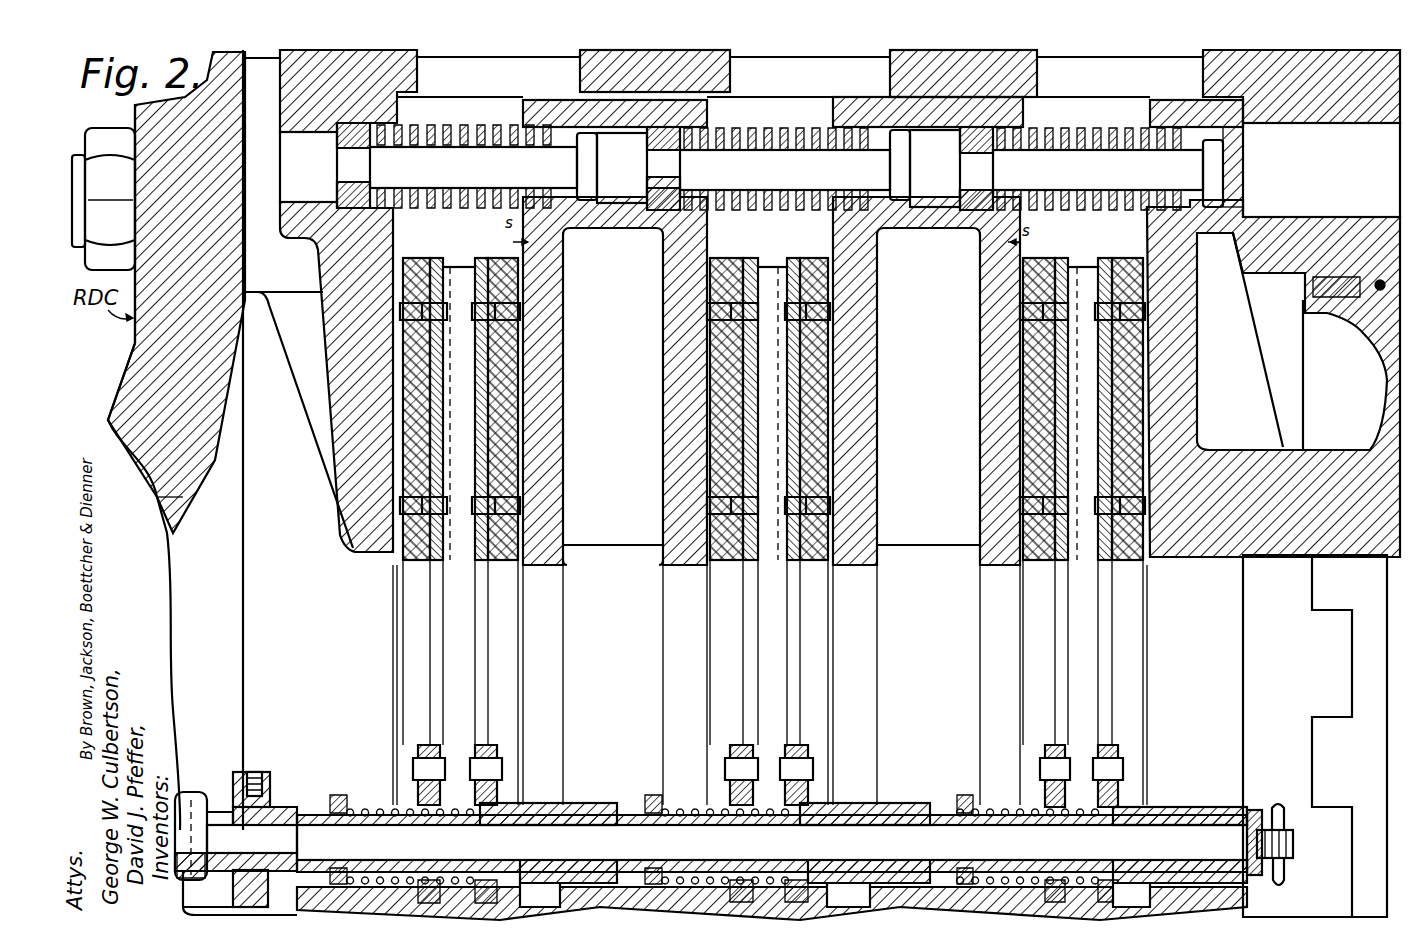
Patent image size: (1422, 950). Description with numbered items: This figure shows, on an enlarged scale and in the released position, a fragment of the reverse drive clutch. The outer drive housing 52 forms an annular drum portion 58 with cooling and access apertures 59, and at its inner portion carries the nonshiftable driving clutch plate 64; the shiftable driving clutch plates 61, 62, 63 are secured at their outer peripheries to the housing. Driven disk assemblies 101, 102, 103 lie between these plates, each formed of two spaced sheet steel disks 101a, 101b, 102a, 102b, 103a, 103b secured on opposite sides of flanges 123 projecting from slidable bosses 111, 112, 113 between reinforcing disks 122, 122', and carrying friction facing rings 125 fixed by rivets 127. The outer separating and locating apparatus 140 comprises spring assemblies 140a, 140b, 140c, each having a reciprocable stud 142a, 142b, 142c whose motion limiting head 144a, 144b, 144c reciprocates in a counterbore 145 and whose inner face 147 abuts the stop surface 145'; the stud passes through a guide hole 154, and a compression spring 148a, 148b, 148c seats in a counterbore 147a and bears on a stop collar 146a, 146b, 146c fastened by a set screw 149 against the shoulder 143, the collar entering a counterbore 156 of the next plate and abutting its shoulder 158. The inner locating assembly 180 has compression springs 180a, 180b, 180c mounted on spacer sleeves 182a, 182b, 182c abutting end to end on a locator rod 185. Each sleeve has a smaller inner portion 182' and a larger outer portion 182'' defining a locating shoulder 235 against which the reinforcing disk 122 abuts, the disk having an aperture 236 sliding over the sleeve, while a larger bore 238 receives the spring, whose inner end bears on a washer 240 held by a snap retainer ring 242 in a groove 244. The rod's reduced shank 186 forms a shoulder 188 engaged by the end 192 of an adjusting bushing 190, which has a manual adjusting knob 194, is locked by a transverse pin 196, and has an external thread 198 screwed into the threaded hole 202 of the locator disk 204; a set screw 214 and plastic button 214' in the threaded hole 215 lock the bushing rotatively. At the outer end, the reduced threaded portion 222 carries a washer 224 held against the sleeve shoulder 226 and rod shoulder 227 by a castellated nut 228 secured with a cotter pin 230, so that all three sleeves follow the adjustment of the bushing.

The outer drive housing 52 is at (350, 63).
The annular drum portion 58 is at (582, 70).
The apertures 59 is at (418, 72).
The driving clutch plate 61 is at (1195, 545).
The driving clutch plate 62 is at (921, 553).
The driving clutch plate 63 is at (608, 553).
The driving clutch plate 64 is at (362, 505).
The driven disk assembly 101 is at (1085, 275).
The sheet steel disk 101a is at (1110, 565).
The sheet steel disk 101b is at (1052, 565).
The driven disk assembly 102 is at (772, 272).
The sheet steel disk 102a is at (800, 565).
The sheet steel disk 102b is at (740, 565).
The driven disk assembly 103 is at (468, 275).
The sheet steel disk 103a is at (490, 565).
The sheet steel disk 103b is at (430, 565).
The slidable boss 111 is at (1142, 910).
The slidable boss 112 is at (852, 895).
The slidable boss 113 is at (542, 895).
The reinforcing disk 122 is at (808, 760).
The reinforcing disk 122' is at (676, 712).
The flange 123 is at (450, 748).
The friction facing rings 125 is at (720, 370).
The rivets 127 is at (718, 312).
The separating and locating apparatus 140 is at (320, 170).
The spring assembly 140a is at (1112, 127).
The spring assembly 140b is at (772, 127).
The spring assembly 140c is at (466, 125).
The reciprocable stud 142a is at (1110, 176).
The reciprocable stud 142b is at (808, 176).
The reciprocable stud 142c is at (490, 176).
The shoulder 143 is at (368, 171).
The motion limiting head 144a is at (1223, 172).
The motion limiting head 144b is at (890, 175).
The motion limiting head 144c is at (577, 165).
The counterbore 145 is at (949, 133).
The stop surface 145' is at (1275, 207).
The stop collar 146a is at (940, 232).
The stop collar 146b is at (630, 232).
The stop collar 146c is at (323, 260).
The inner face 147 is at (1200, 163).
The counterbore 147a is at (1128, 130).
The compression spring 148a is at (1080, 232).
The compression spring 148b is at (748, 244).
The compression spring 148c is at (440, 240).
The set screw 149 is at (337, 147).
The guide hole 154 is at (1240, 140).
The counterbore 156 is at (393, 130).
The shoulder 158 is at (606, 220).
The locating assembly 180 is at (325, 735).
The compression spring 180a is at (1010, 800).
The compression spring 180b is at (690, 800).
The compression spring 180c is at (380, 800).
The inner portion 182' is at (650, 872).
The outer portion 182'' is at (883, 888).
The spacer sleeve 182a is at (1195, 785).
The spacer sleeve 182b is at (880, 805).
The spacer sleeve 182c is at (580, 803).
The locator rod 185 is at (634, 851).
The reduced shank portion 186 is at (268, 880).
The shoulder 188 is at (297, 850).
The adjusting bushing 190 is at (247, 790).
The outer end 192 is at (290, 808).
The manual adjusting knob 194 is at (198, 792).
The transverse pin 196 is at (223, 841).
The external thread 198 is at (240, 892).
The threaded hole 202 is at (236, 839).
The locator disk 204 is at (270, 778).
The set screw 214 is at (259, 765).
The plastic button 214' is at (296, 786).
The threaded hole 215 is at (252, 772).
The reduced threaded portion 222 is at (1293, 845).
The washer 224 is at (1257, 810).
The shoulder 226 is at (1275, 882).
The shoulder 227 is at (1278, 805).
The castellated nut 228 is at (1286, 865).
The cotter pin 230 is at (1286, 880).
The locating shoulder 235 is at (530, 826).
The aperture 236 is at (480, 826).
The bore 238 is at (455, 826).
The washer 240 is at (340, 795).
The snap retainer ring 242 is at (650, 795).
The groove 244 is at (648, 826).